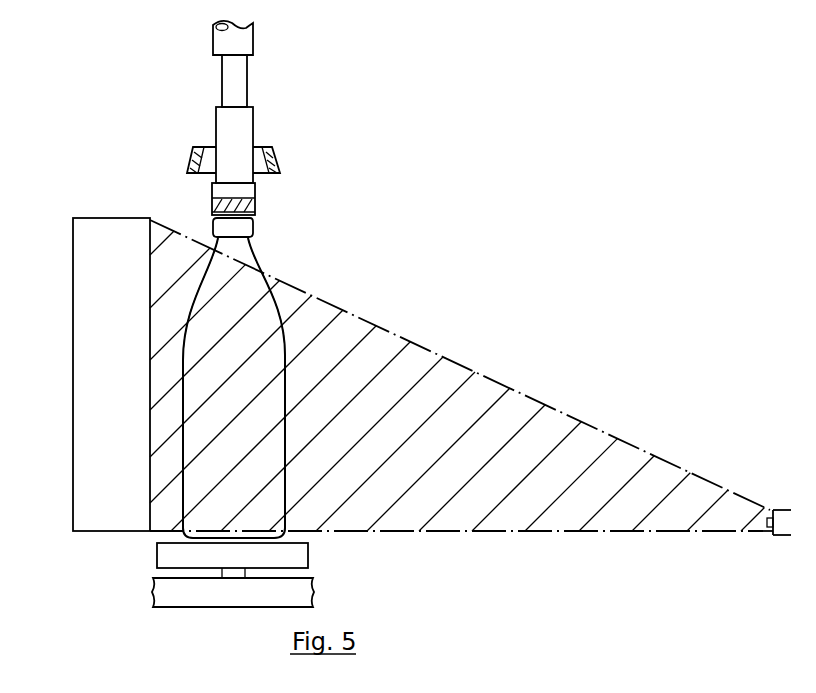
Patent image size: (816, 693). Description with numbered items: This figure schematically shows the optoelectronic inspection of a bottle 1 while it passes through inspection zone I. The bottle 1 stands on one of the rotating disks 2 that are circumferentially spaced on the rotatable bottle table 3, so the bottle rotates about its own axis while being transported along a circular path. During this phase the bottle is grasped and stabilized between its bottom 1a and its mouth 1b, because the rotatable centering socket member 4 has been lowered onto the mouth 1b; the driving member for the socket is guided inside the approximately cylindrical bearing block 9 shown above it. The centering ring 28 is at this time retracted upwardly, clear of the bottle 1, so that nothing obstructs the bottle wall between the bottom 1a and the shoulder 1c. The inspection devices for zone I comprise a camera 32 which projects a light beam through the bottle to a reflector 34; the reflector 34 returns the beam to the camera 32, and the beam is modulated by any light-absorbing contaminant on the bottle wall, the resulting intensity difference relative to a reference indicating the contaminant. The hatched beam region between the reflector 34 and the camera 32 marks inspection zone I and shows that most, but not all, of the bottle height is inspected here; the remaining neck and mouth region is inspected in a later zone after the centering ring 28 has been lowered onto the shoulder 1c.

The bottle 1 is at (219, 390).
The bottle bottom 1a is at (183, 536).
The bottle mouth 1b is at (253, 219).
The shoulder 1c is at (253, 289).
The rotating disk 2 is at (287, 555).
The rotatable bottle table 3 is at (153, 603).
The centering socket member 4 is at (223, 197).
The bearing block 9 is at (240, 43).
The centering ring 28 is at (280, 172).
The camera 32 is at (781, 521).
The reflector 34 is at (108, 444).
The inspection zone I is at (470, 407).